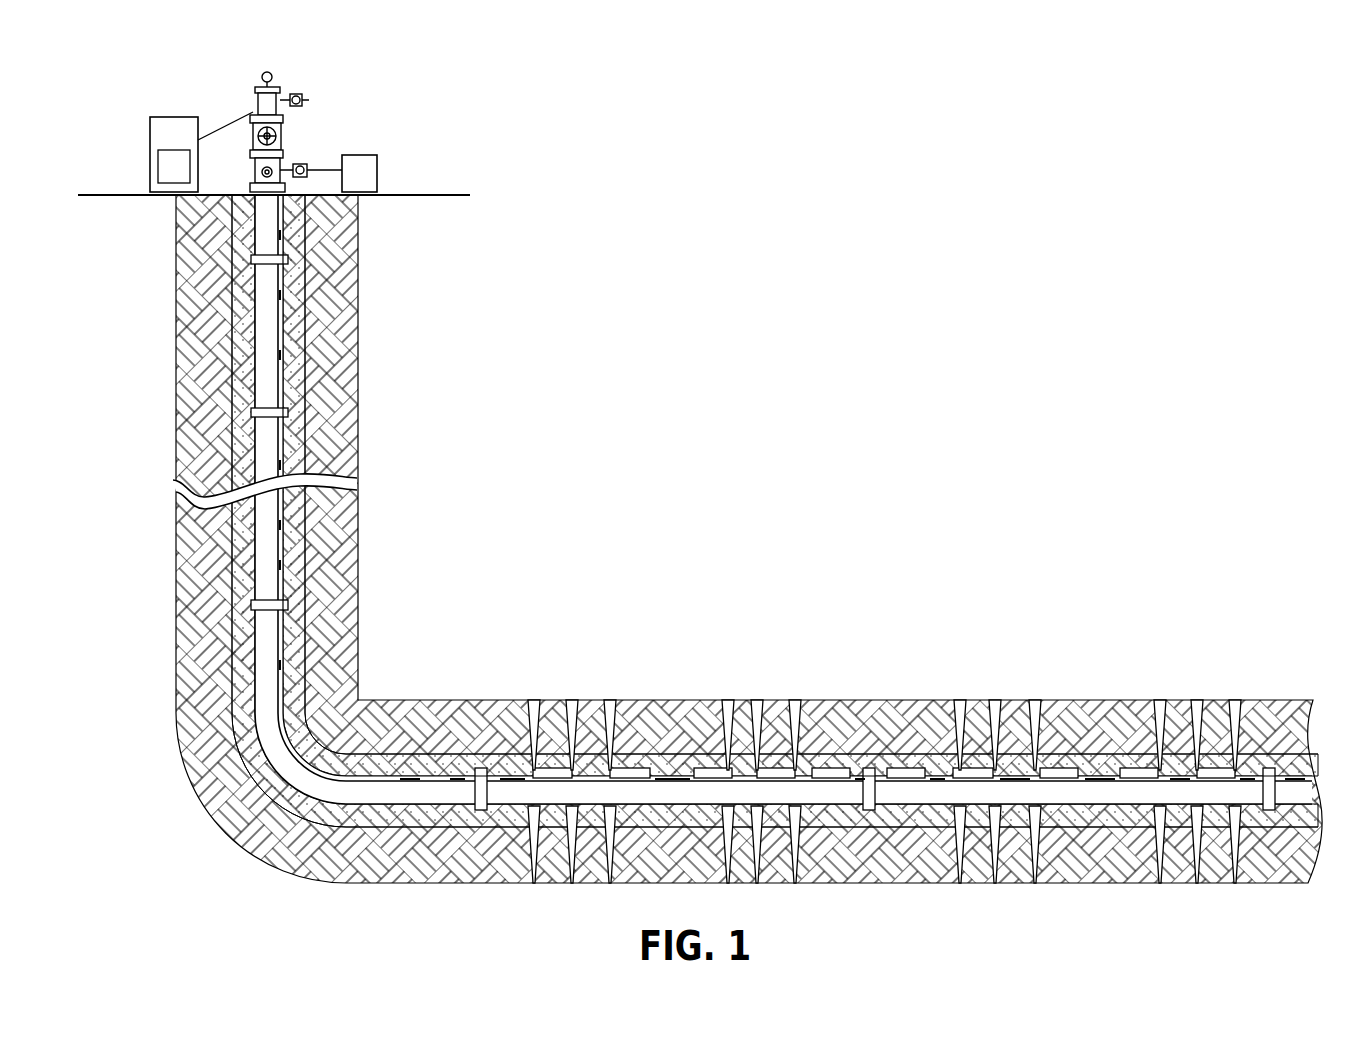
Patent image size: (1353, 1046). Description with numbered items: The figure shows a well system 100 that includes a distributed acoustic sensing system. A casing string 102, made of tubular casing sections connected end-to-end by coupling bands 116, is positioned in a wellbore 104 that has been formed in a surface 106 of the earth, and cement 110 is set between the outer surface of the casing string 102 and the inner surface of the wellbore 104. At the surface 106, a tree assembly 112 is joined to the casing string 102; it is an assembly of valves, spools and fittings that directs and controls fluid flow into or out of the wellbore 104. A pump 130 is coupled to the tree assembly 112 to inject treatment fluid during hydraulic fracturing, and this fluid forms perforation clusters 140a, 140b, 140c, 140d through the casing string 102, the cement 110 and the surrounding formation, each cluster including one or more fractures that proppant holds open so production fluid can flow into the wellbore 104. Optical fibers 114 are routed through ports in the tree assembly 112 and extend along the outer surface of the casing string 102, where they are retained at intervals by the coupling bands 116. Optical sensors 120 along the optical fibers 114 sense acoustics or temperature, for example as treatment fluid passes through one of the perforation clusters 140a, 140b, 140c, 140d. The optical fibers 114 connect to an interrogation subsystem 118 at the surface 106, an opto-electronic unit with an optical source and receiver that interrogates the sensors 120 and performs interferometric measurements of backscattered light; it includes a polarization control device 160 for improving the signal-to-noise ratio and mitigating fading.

The well system 100 is at (443, 119).
The casing string 102 is at (253, 287).
The wellbore 104 is at (243, 210).
The surface 106 is at (455, 195).
The cement 110 is at (305, 440).
The tree assembly 112 is at (288, 142).
The optical fibers 114 is at (252, 108).
The coupling bands 116 is at (288, 412).
The interrogation subsystem 118 is at (170, 117).
The optical sensors 120 is at (906, 758).
The pump 130 is at (377, 165).
The perforation cluster 140a is at (1160, 700).
The perforation cluster 140b is at (959, 700).
The perforation cluster 140c is at (727, 700).
The perforation cluster 140d is at (533, 700).
The polarization control device 160 is at (158, 165).